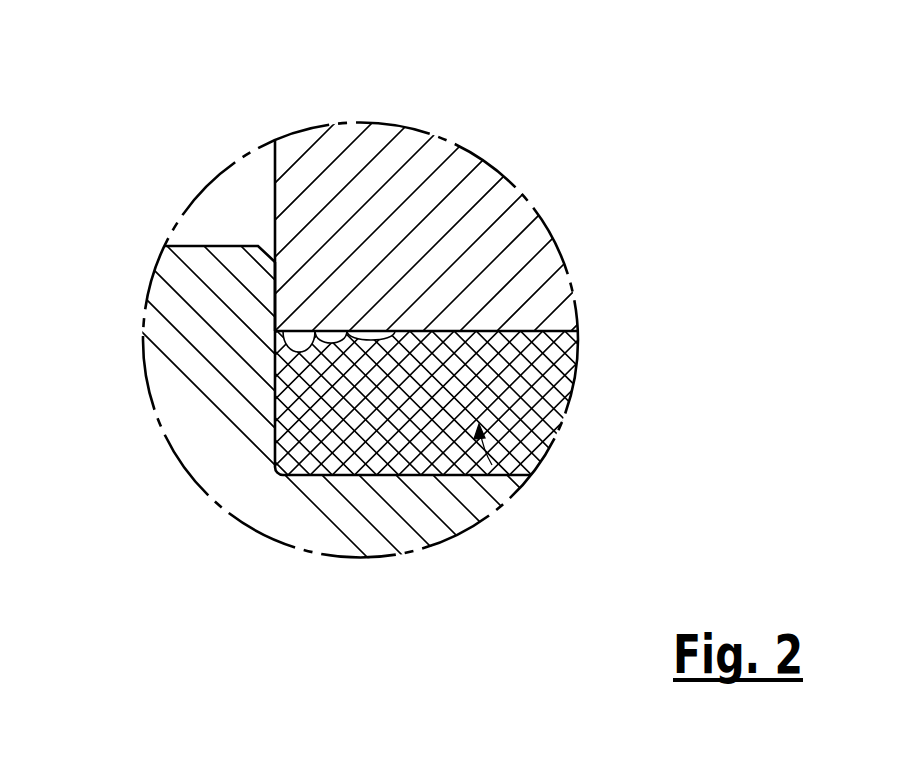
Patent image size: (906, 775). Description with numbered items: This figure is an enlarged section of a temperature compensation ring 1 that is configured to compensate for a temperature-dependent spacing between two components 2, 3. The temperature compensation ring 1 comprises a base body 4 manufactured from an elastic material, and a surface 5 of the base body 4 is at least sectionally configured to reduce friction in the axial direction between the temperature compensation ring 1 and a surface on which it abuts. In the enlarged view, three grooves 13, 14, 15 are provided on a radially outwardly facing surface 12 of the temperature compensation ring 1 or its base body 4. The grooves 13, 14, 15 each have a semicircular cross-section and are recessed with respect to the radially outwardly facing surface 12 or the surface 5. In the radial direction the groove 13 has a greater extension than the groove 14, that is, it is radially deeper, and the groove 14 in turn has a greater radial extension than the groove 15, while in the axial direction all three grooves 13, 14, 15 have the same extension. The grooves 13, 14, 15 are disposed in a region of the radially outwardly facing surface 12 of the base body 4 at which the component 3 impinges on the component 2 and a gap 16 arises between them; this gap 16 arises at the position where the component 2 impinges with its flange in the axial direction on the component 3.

The temperature compensation ring 1 is at (515, 476).
The component 2 is at (237, 437).
The component 3 is at (545, 310).
The base body 4 is at (527, 388).
The surface 5 is at (487, 330).
The radially outwardly facing surface 12 is at (370, 335).
The groove 13 is at (298, 340).
The groove 14 is at (333, 337).
The groove 15 is at (275, 180).
The gap 16 is at (275, 302).